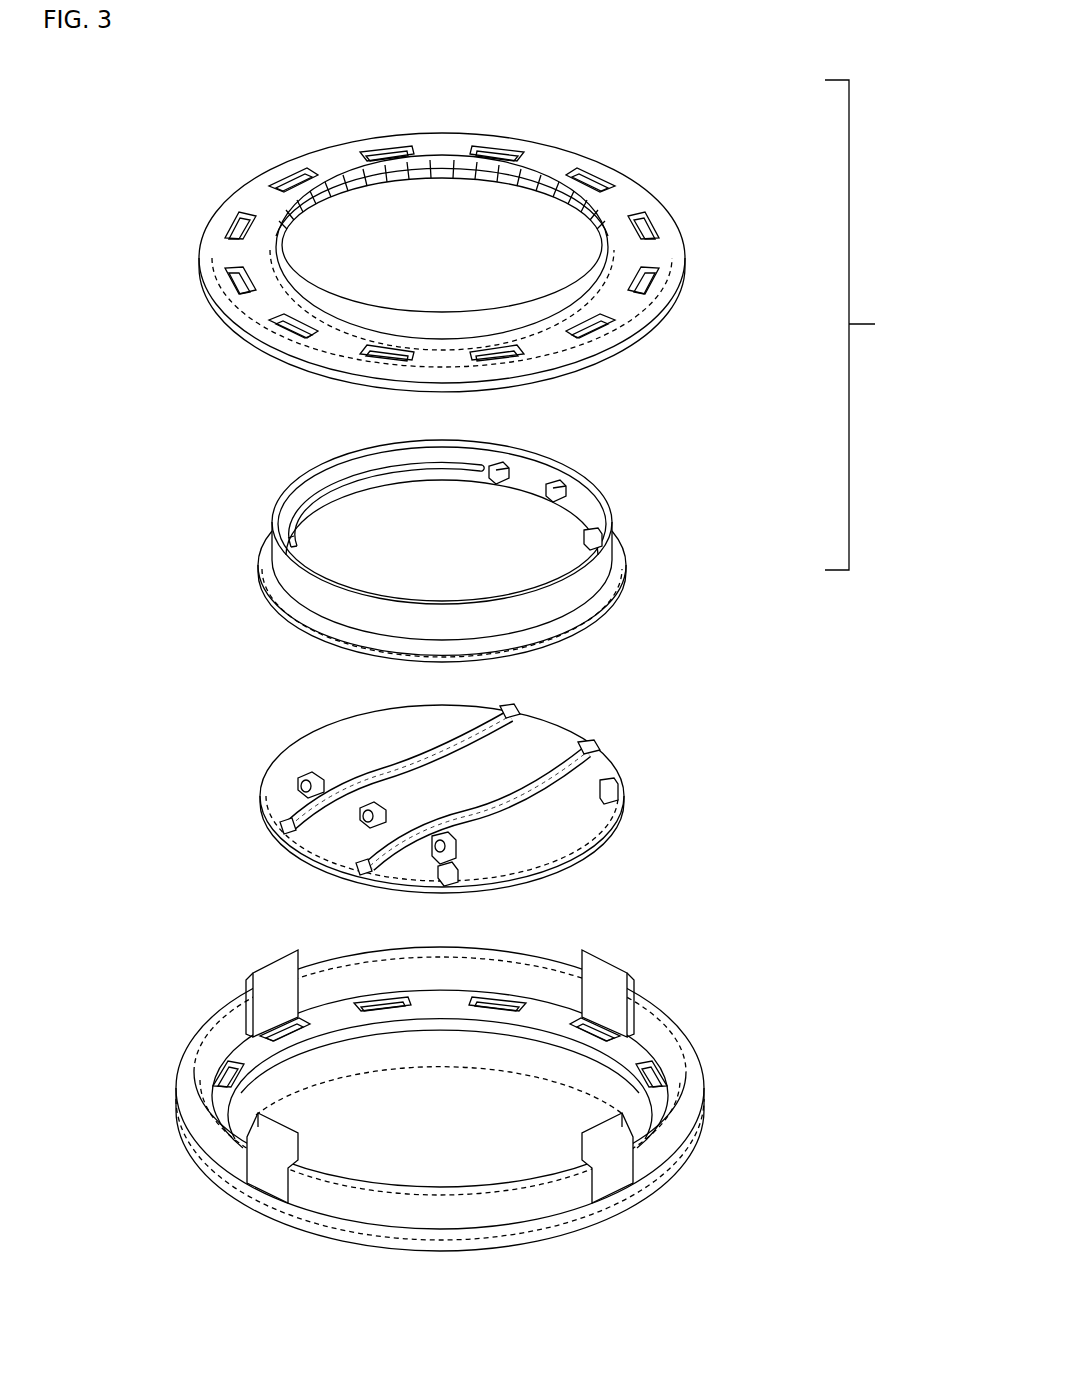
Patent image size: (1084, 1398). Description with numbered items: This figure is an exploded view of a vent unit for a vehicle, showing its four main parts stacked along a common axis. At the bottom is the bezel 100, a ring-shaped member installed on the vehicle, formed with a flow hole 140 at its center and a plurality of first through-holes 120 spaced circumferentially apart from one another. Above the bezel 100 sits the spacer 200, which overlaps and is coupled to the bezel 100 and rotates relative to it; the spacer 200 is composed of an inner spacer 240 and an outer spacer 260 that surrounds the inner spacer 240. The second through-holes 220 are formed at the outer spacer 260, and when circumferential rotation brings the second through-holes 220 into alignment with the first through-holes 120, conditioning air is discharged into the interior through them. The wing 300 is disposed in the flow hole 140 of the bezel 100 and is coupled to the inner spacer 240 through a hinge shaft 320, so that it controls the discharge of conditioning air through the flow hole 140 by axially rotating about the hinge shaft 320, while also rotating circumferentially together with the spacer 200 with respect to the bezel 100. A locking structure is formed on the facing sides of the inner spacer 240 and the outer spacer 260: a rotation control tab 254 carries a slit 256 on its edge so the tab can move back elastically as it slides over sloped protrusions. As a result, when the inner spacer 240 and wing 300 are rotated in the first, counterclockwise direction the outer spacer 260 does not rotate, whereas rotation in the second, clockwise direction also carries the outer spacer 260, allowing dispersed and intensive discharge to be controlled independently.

The bezel 100 is at (678, 996).
The first through-holes 120 is at (652, 1080).
The flow hole 140 is at (298, 1105).
The spacer 200 is at (891, 325).
The second through-holes 220 is at (657, 228).
The inner spacer 240 is at (642, 538).
The rotation control tab 254 is at (290, 508).
The slit 256 is at (297, 490).
The outer spacer 260 is at (664, 165).
The wing 300 is at (592, 716).
The hinge shaft 320 is at (568, 492).